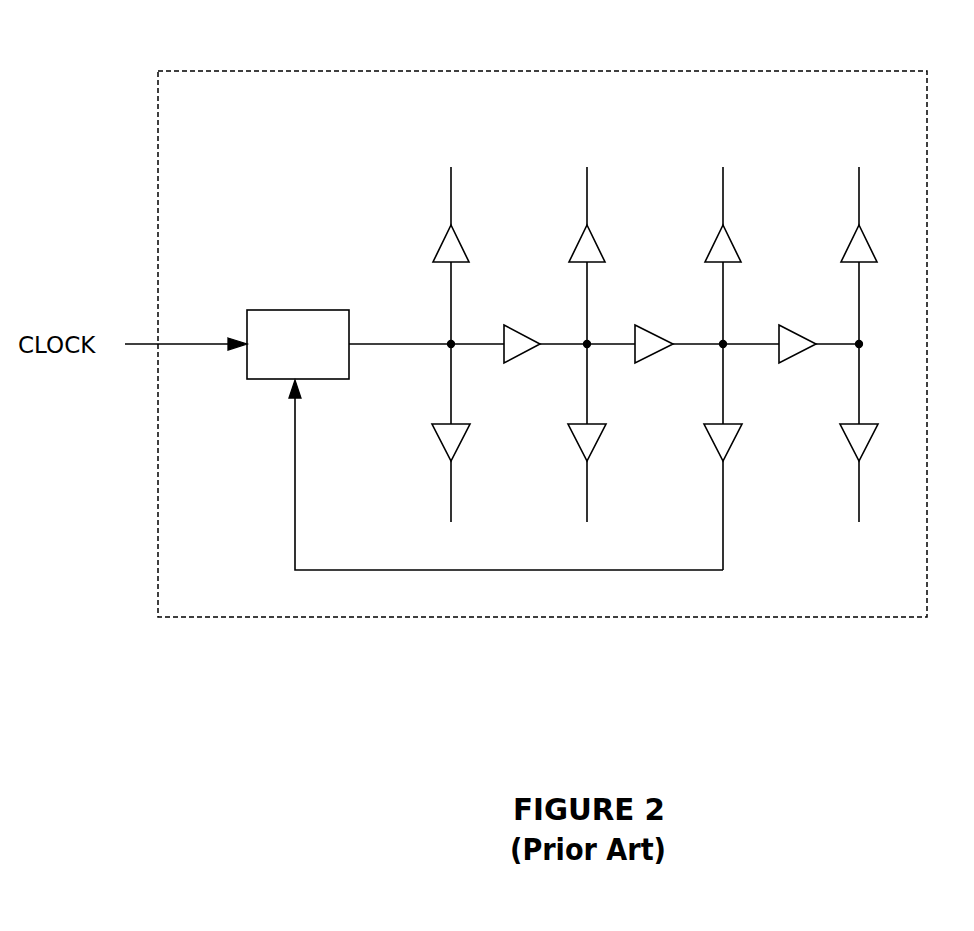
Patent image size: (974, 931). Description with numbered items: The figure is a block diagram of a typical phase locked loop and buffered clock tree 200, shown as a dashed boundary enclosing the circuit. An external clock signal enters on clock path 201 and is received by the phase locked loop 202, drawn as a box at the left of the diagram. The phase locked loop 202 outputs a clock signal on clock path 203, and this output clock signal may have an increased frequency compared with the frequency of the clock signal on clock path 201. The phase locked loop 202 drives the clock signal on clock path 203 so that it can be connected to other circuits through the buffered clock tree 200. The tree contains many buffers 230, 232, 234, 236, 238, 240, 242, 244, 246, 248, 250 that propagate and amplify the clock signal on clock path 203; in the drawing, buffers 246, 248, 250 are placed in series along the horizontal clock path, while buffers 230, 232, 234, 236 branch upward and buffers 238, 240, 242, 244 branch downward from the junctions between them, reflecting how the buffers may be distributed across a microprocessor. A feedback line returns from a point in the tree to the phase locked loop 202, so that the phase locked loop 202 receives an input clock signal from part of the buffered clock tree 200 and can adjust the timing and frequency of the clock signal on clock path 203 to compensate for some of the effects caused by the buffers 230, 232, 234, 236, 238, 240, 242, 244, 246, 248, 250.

The buffered clock tree 200 is at (859, 71).
The clock path 201 is at (184, 344).
The phase locked loop 202 is at (309, 310).
The clock path 203 is at (383, 344).
The buffer 230 is at (458, 237).
The buffer 232 is at (594, 237).
The buffer 234 is at (730, 237).
The buffer 236 is at (866, 237).
The buffer 238 is at (462, 424).
The buffer 240 is at (598, 424).
The buffer 242 is at (734, 424).
The buffer 244 is at (870, 424).
The buffer 246 is at (513, 333).
The buffer 248 is at (645, 333).
The buffer 250 is at (788, 333).